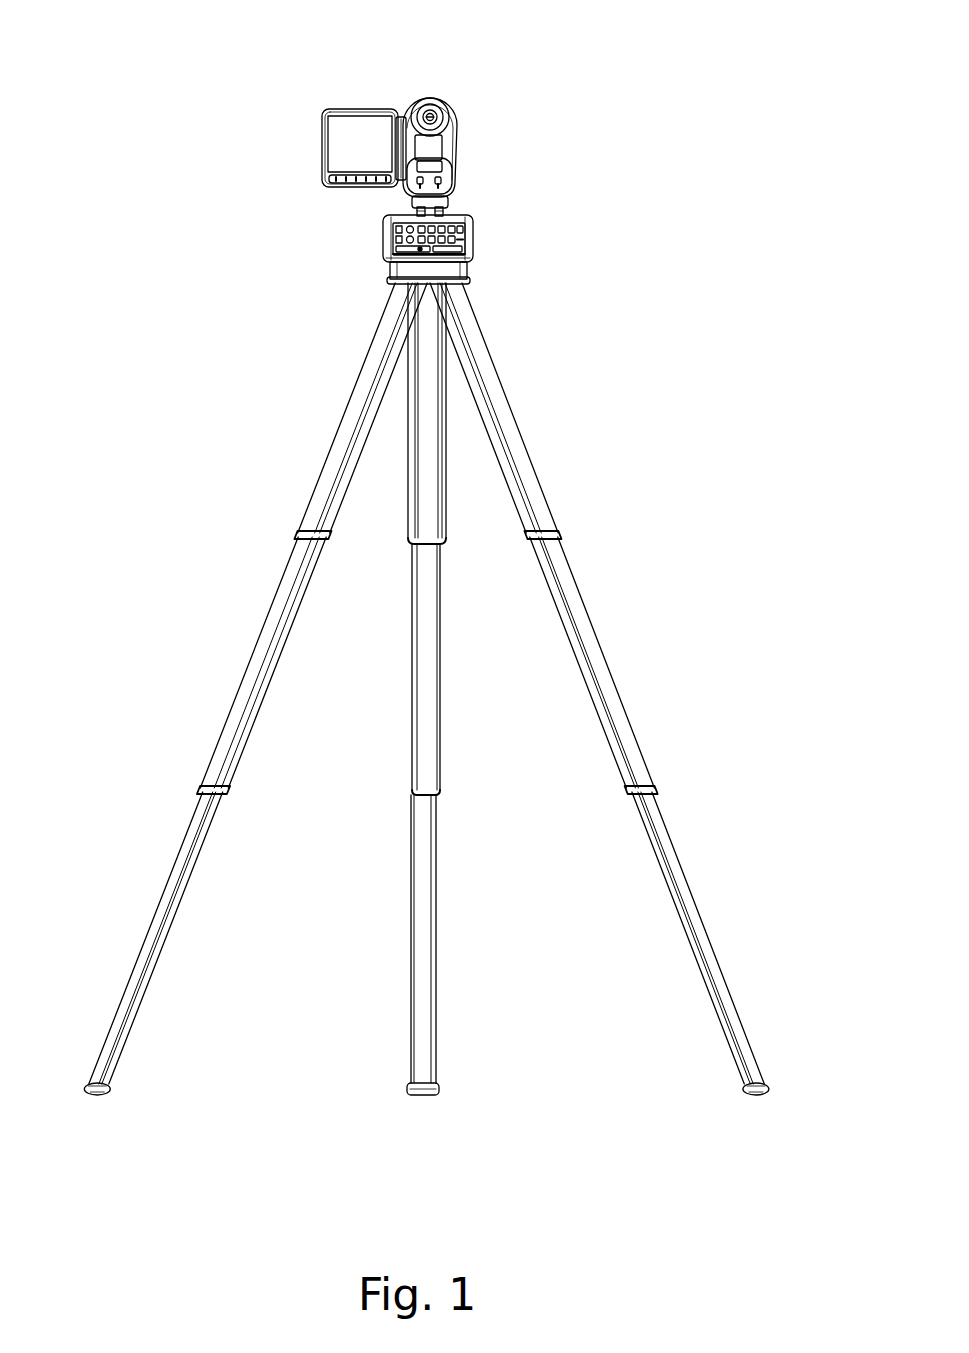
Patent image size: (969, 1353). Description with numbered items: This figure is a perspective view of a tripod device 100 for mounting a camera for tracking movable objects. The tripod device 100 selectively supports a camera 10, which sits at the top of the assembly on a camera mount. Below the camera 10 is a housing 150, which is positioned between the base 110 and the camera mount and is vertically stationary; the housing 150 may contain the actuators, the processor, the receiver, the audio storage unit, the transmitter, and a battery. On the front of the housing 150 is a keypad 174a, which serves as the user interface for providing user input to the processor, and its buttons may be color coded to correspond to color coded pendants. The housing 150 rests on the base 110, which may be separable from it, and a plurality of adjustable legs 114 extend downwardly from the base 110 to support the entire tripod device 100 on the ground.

The tripod device 100 is at (574, 105).
The camera 10 is at (458, 104).
The housing 150 is at (483, 229).
The keypad 174a is at (392, 242).
The base 110 is at (470, 278).
The adjustable legs 114 is at (543, 441).